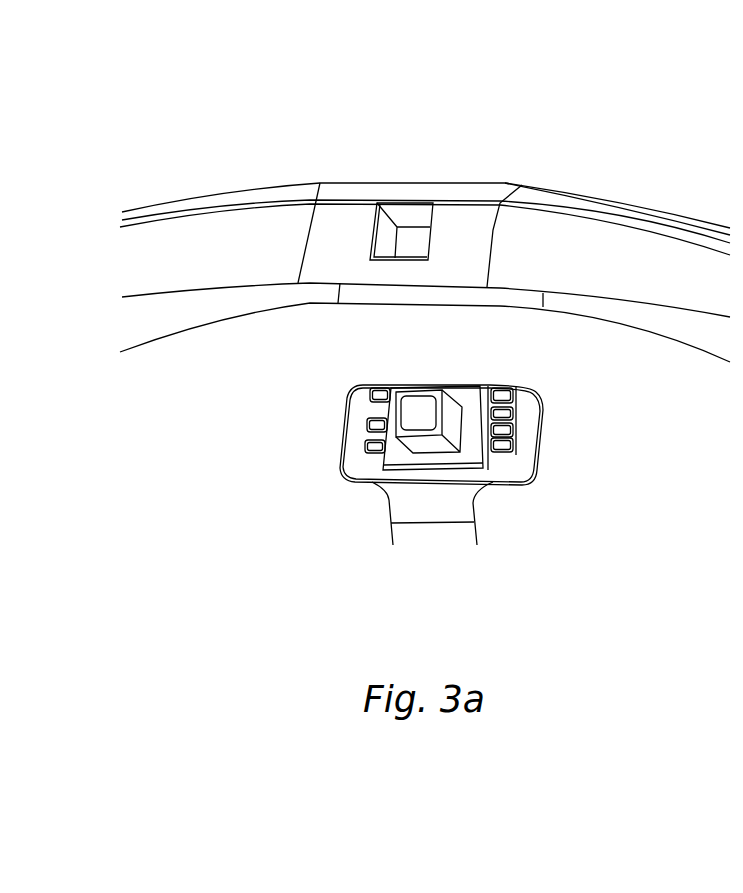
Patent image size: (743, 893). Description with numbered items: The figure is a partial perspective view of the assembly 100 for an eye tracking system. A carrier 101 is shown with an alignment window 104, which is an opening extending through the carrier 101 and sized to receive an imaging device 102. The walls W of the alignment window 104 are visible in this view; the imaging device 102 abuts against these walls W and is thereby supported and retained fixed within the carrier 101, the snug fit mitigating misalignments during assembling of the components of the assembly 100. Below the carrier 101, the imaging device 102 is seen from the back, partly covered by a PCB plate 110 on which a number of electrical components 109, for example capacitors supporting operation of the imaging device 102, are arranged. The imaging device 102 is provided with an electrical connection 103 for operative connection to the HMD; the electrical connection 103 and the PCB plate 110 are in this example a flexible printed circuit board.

The walls W is at (375, 233).
The assembly 100 is at (227, 452).
The carrier 101 is at (498, 185).
The imaging device 102 is at (402, 392).
The electrical connection 103 is at (472, 507).
The alignment window 104 is at (400, 208).
The electrical components 109 is at (513, 398).
The PCB plate 110 is at (538, 435).